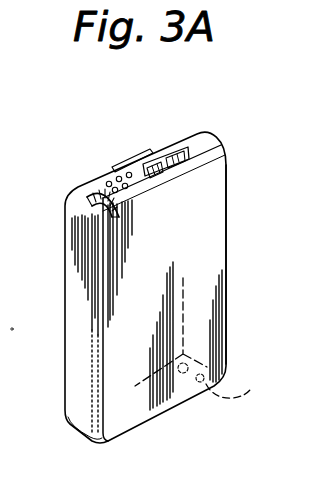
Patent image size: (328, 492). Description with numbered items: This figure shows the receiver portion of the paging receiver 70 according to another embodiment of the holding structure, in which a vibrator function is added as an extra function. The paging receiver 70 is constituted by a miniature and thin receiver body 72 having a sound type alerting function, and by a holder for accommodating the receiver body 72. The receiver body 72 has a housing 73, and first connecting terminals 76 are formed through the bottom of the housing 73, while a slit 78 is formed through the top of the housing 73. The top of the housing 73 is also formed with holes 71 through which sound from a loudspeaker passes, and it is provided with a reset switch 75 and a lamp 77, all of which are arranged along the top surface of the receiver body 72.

The paging receiver 70 is at (145, 287).
The holes 71 is at (104, 186).
The receiver body 72 is at (214, 221).
The housing 73 is at (207, 307).
The reset switch 75 is at (162, 154).
The first connecting terminals 76 is at (250, 390).
The lamp 77 is at (90, 210).
The slit 78 is at (135, 156).